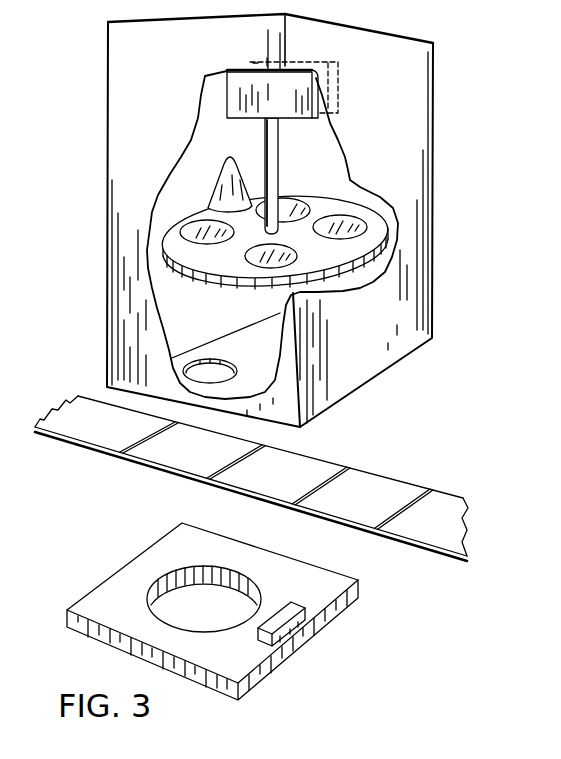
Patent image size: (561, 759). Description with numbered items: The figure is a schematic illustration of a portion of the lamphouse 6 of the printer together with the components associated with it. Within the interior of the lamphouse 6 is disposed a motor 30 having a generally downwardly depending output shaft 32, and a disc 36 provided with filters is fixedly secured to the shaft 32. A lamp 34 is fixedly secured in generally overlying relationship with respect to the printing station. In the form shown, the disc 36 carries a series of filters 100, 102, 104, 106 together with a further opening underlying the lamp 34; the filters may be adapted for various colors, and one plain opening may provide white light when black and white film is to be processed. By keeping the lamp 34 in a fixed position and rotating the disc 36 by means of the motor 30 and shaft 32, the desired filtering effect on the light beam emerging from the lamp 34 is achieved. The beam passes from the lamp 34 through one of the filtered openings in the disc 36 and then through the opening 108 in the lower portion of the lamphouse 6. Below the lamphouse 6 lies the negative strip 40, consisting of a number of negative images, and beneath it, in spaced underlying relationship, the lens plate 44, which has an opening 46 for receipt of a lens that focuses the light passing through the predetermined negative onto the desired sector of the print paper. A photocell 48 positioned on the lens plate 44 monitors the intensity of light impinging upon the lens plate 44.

The housing 6 is at (438, 92).
The motor 30 is at (300, 102).
The output shaft 32 is at (277, 162).
The lamp 34 is at (218, 184).
The disc 36 is at (384, 241).
The negative strip 40 is at (368, 488).
The lens plate 44 is at (110, 572).
The opening 46 is at (216, 592).
The photocell 48 is at (284, 621).
The filter 100 is at (190, 236).
The filter 102 is at (268, 260).
The filter 104 is at (345, 230).
The filter 106 is at (303, 200).
The opening 108 is at (213, 368).